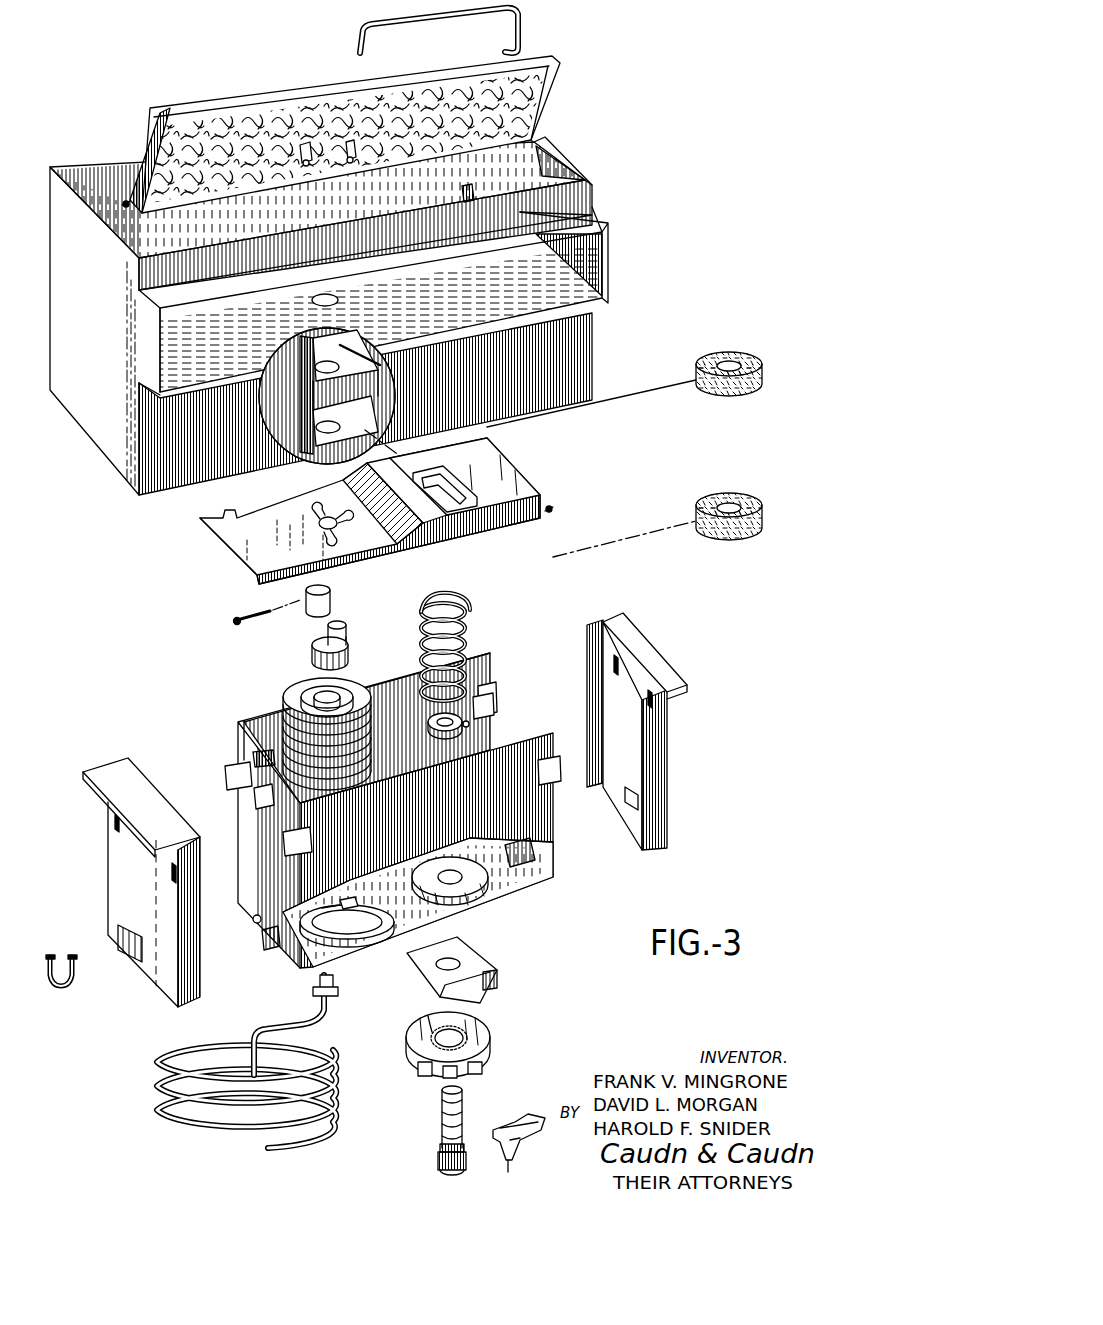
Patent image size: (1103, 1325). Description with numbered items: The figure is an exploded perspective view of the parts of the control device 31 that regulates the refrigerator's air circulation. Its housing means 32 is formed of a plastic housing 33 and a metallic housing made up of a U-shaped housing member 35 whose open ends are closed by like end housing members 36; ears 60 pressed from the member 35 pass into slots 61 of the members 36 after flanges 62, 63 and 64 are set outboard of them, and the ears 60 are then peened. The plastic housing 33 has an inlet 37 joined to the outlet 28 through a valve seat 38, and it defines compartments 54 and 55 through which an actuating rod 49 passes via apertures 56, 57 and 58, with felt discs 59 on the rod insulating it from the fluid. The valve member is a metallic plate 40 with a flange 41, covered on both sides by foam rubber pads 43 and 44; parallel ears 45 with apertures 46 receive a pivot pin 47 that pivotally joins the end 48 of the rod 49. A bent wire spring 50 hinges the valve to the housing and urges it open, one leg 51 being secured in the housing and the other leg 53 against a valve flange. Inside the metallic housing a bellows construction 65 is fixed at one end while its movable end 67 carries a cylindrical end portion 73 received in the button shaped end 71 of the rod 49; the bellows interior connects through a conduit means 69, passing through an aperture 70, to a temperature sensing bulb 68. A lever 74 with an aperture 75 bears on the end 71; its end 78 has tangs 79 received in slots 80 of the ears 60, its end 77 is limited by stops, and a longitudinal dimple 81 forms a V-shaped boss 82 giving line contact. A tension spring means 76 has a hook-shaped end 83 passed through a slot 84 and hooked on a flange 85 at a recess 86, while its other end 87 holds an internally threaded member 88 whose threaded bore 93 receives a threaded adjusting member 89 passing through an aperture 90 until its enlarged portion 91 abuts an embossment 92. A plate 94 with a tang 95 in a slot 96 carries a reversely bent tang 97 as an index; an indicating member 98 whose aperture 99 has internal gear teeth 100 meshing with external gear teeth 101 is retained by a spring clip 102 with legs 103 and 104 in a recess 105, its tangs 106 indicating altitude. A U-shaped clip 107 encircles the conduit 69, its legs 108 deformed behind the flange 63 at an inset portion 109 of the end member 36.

The outlet 28 is at (598, 258).
The control device 31 is at (624, 92).
The housing means 32 is at (600, 382).
The plastic housing 33 is at (596, 192).
The U-shaped housing member 35 is at (556, 812).
The housing members 36 is at (110, 870).
The inlet 37 is at (545, 170).
The valve seat 38 is at (464, 190).
The metallic plate 40 is at (124, 200).
The flange 41 is at (186, 106).
The foam rubber pad 43 is at (145, 158).
The foam rubber pad 44 is at (228, 135).
The ears 45 is at (349, 163).
The apertures 46 is at (352, 158).
The pivot pin 47 is at (258, 616).
The end of actuating rod 48 is at (331, 600).
The actuating rod 49 is at (348, 633).
The bent wire spring 50 is at (434, 21).
The leg of spring 51 is at (521, 30).
The leg of spring 53 is at (365, 42).
The compartment 54 is at (363, 350).
The compartment 55 is at (372, 400).
The aperture 56 is at (322, 430).
The aperture 57 is at (320, 368).
The aperture 58 is at (340, 300).
The felt discs 59 is at (762, 523).
The ears 60 is at (284, 842).
The slots 61 is at (174, 868).
The flange 62 is at (536, 854).
The flange 63 is at (253, 920).
The flange 64 is at (271, 946).
The bellows construction 65 is at (290, 703).
The movable end of bellows 67 is at (352, 908).
The temperature sensing bulb 68 is at (280, 1148).
The conduit means 69 is at (336, 1060).
The aperture 70 is at (385, 920).
The button shaped end 71 is at (350, 655).
The cylindrical end portion 73 is at (334, 694).
The lever 74 is at (396, 552).
The aperture 75 is at (343, 518).
The tension spring means 76 is at (466, 640).
The end of lever 77 is at (256, 752).
The end of lever 78 is at (520, 475).
The tangs 79 is at (553, 512).
The slots 80 is at (552, 785).
The longitudinal dimple 81 is at (318, 516).
The V-shaped boss 82 is at (328, 530).
The hook-shaped end 83 is at (464, 597).
The slot 84 is at (425, 477).
The flange 85 is at (465, 483).
The recess 86 is at (462, 478).
The end of spring 87 is at (494, 688).
The internally threaded member 88 is at (470, 722).
The threaded adjusting member 89 is at (463, 1108).
The aperture 90 is at (460, 884).
The enlarged portion 91 is at (464, 1144).
The embossment 92 is at (488, 880).
The threaded bore 93 is at (437, 718).
The plate 94 is at (498, 970).
The tang 95 is at (422, 962).
The slot 96 is at (382, 908).
The reversely bent tang 97 is at (500, 985).
The indicating member 98 is at (488, 1045).
The aperture 99 is at (430, 1030).
The internal gear teeth 100 is at (466, 1032).
The external gear teeth 101 is at (438, 1152).
The spring clip 102 is at (533, 1130).
The leg of spring clip 103 is at (508, 1118).
The leg of spring clip 104 is at (511, 1162).
The recess 105 is at (440, 1168).
The tangs 106 is at (424, 1072).
The U-shaped clip 107 is at (62, 987).
The legs of clip 108 is at (76, 960).
The inset portion 109 is at (124, 938).